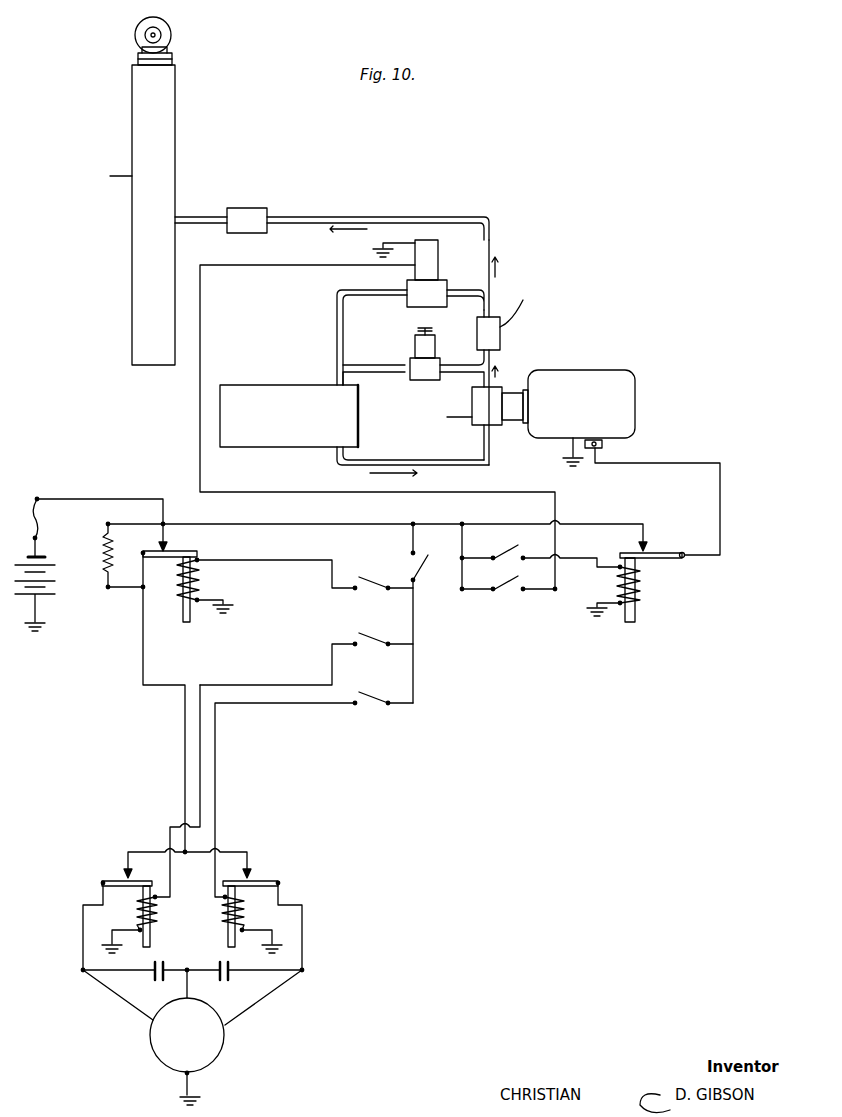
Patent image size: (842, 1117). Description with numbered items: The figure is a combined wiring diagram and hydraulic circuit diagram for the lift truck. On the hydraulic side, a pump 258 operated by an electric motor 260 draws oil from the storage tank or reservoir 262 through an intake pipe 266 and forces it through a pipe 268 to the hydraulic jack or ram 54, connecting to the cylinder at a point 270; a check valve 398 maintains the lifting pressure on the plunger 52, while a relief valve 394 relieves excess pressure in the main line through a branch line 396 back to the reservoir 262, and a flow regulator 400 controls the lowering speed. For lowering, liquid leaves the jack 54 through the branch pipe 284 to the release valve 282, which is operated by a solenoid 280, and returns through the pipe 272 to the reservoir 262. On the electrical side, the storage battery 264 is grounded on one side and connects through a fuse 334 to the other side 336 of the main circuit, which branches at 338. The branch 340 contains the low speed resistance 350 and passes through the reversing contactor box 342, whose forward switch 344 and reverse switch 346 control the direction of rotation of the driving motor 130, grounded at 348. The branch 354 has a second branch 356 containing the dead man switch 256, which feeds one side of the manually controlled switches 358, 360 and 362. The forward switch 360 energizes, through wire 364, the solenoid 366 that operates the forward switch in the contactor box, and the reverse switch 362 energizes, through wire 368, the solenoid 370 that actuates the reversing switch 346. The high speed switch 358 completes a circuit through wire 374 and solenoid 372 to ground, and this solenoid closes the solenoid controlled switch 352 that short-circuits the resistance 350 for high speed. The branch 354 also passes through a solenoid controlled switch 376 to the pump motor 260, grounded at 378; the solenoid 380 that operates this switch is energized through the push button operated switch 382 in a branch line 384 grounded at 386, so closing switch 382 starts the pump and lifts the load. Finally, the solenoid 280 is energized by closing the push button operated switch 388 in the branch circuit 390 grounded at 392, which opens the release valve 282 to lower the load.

The plunger 52 is at (135, 63).
The hydraulic jack or ram 54 is at (150, 263).
The driving motor 130 is at (217, 1047).
The dead man switch 256 is at (413, 570).
The pump 258 is at (500, 425).
The pump operating motor 260 is at (635, 407).
The storage tank or oil reservoir 262 is at (275, 447).
The storage battery 264 is at (58, 568).
The intake pipe 266 is at (450, 467).
The pipe 268 is at (500, 360).
The connection point 270 is at (178, 215).
The return pipe 272 is at (337, 325).
The solenoid 280 is at (438, 263).
The release valve 282 is at (407, 285).
The branch pipe 284 is at (462, 300).
The fuse 334 is at (43, 482).
The main circuit side 336 is at (97, 499).
The branch point 338 is at (167, 522).
The branch 340 is at (143, 670).
The reversing contactor box 342 is at (145, 850).
The forward switch 344 is at (120, 875).
The reverse switch 346 is at (260, 872).
The ground 348 is at (200, 1100).
The low speed resistance 350 is at (103, 565).
The solenoid controlled switch 352 is at (168, 547).
The branch 354 is at (318, 515).
The second branch 356 is at (414, 540).
The high speed switch 358 is at (372, 580).
The forward switch 360 is at (372, 630).
The reverse switch 362 is at (370, 688).
The wire 364 is at (302, 677).
The solenoid 366 is at (176, 946).
The wire 368 is at (273, 707).
The solenoid 370 is at (222, 913).
The solenoid 372 is at (197, 577).
The wire 374 is at (265, 562).
The solenoid controlled switch 376 is at (657, 550).
The ground 378 is at (580, 468).
The solenoid 380 is at (640, 587).
The manually controlled switch 382 is at (510, 555).
The branch line 384 is at (593, 547).
The ground 386 is at (600, 628).
The switch 388 is at (505, 586).
The branch circuit 390 is at (198, 392).
The ground 392 is at (381, 247).
The relief valve 394 is at (415, 345).
The branch line 396 is at (386, 373).
The check valve 398 is at (569, 303).
The flow regulator 400 is at (256, 206).